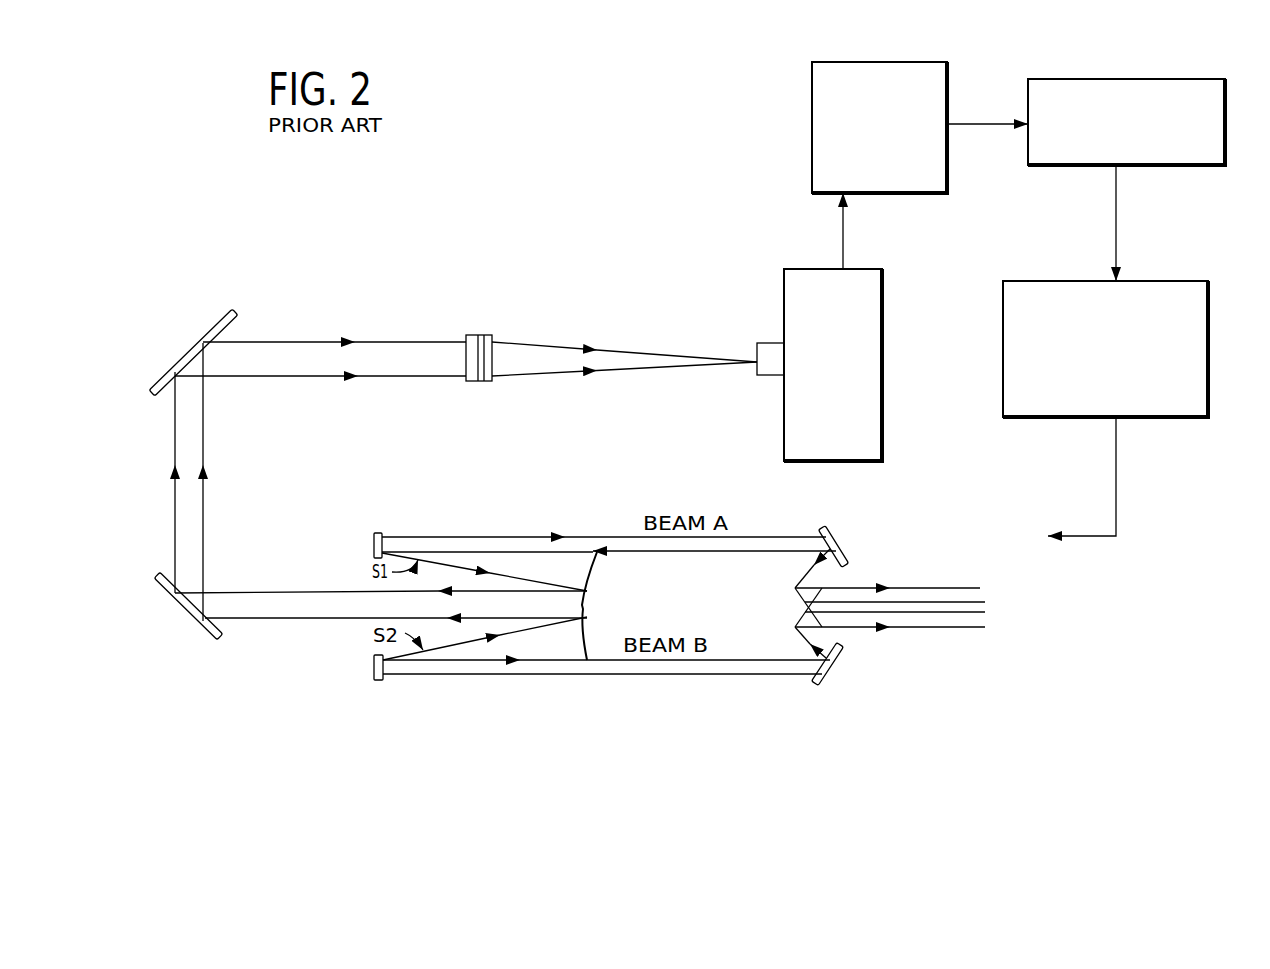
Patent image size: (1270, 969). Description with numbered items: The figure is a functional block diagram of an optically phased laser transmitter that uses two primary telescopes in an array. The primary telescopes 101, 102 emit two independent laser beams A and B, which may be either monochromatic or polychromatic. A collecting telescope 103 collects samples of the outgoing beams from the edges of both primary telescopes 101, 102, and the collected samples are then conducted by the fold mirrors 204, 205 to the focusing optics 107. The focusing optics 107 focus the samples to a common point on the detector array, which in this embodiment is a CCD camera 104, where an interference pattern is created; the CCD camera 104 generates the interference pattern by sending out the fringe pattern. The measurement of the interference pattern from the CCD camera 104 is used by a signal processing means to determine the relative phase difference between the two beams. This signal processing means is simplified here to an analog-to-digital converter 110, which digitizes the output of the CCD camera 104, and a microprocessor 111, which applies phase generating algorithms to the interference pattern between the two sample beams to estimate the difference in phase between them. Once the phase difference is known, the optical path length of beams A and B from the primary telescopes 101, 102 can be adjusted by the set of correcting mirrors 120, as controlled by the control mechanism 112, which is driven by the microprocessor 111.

The primary telescope 101 is at (374, 542).
The primary telescope 102 is at (383, 683).
The collecting telescope 103 is at (587, 607).
The CCD camera 104 is at (873, 269).
The focusing optics 107 is at (480, 381).
The analog-to-digital converter 110 is at (892, 62).
The microprocessor 111 is at (1147, 79).
The control mechanism 112 is at (1172, 281).
The correcting mirrors 120 is at (924, 590).
The fold mirror 204 is at (183, 612).
The fold mirror 205 is at (206, 333).